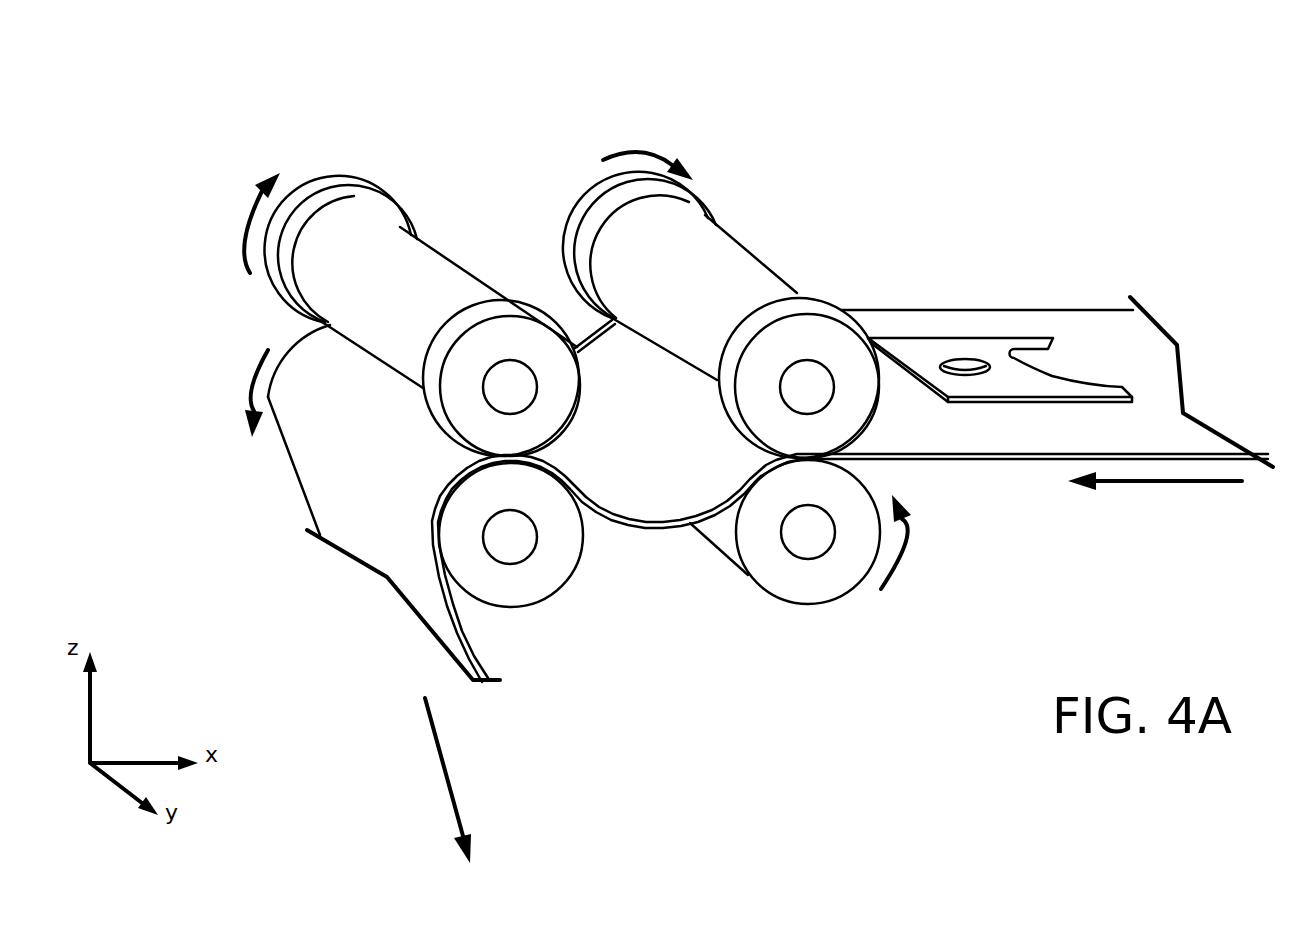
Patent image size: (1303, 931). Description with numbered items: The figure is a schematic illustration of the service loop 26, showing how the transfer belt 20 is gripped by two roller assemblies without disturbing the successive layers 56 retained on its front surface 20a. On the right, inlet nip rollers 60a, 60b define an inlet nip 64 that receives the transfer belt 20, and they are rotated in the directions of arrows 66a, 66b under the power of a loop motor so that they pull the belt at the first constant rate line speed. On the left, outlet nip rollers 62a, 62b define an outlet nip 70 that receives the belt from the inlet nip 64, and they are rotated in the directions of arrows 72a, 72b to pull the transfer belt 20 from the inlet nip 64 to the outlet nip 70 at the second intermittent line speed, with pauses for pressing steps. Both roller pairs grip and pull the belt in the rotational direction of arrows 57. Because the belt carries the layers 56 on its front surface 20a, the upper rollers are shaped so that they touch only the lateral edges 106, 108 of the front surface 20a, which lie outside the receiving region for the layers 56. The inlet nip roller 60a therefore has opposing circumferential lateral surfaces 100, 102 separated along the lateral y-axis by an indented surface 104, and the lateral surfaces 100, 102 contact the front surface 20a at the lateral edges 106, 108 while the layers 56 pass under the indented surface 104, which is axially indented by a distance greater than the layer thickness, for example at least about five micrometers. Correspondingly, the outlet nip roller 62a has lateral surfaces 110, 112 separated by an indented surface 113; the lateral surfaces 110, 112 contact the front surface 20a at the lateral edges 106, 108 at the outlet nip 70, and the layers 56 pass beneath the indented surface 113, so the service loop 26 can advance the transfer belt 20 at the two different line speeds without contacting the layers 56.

The transfer belt 20 is at (1204, 363).
The front surface 20a is at (1100, 327).
The service loop 26 is at (138, 287).
The successive layers 56 is at (975, 345).
The arrows 57 is at (1147, 483).
The inlet nip roller 60a is at (717, 301).
The inlet nip roller 60b is at (808, 604).
The outlet nip roller 62a is at (422, 253).
The outlet nip roller 62b is at (555, 597).
The inlet nip 64 is at (684, 384).
The arrow 66a is at (640, 152).
The arrow 66b is at (898, 561).
The outlet nip 70 is at (363, 377).
The arrow 72a is at (243, 233).
The arrow 72b is at (243, 378).
The lateral surface 100 is at (780, 300).
The lateral surface 102 is at (585, 202).
The indented surface 104 is at (738, 267).
The lateral edge 106 is at (1050, 427).
The lateral edge 108 is at (921, 293).
The lateral surface 110 is at (483, 307).
The lateral surface 112 is at (323, 183).
The indented surface 113 is at (397, 248).